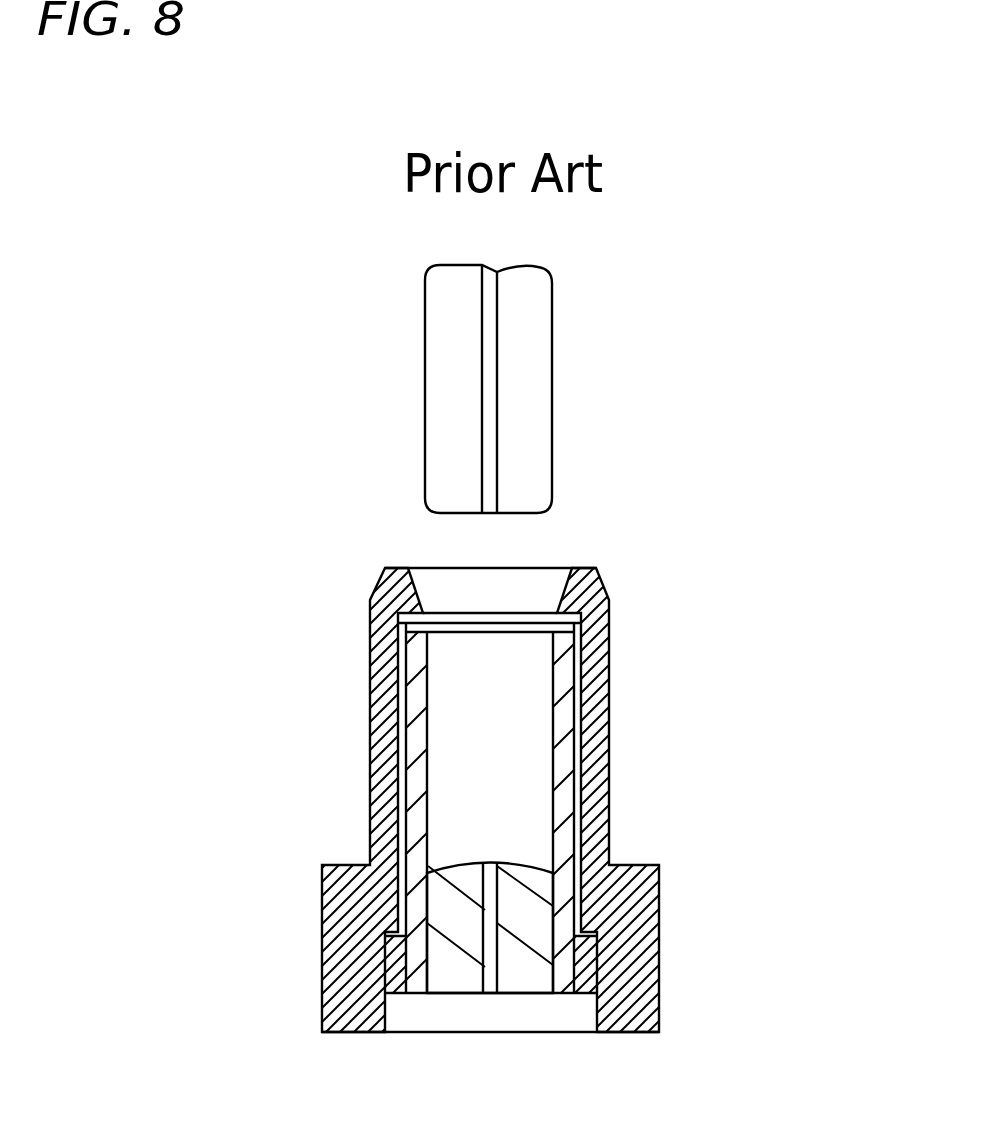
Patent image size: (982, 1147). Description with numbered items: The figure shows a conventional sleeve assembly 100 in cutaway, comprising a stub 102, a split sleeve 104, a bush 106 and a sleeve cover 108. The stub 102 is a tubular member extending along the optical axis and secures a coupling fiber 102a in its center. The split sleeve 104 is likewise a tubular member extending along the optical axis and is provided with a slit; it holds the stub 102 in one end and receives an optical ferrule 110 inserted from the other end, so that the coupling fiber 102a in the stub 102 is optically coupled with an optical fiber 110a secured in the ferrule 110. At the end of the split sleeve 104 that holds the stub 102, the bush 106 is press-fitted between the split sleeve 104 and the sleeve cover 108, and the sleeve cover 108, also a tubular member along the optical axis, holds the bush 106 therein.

The sleeve assembly 100 is at (537, 797).
The stub 102 is at (489, 982).
The coupling fiber 102a is at (483, 968).
The split sleeve 104 is at (563, 797).
The bush 106 is at (588, 978).
The sleeve cover 108 is at (605, 720).
The optical ferrule 110 is at (541, 389).
The optical fiber 110a is at (488, 342).